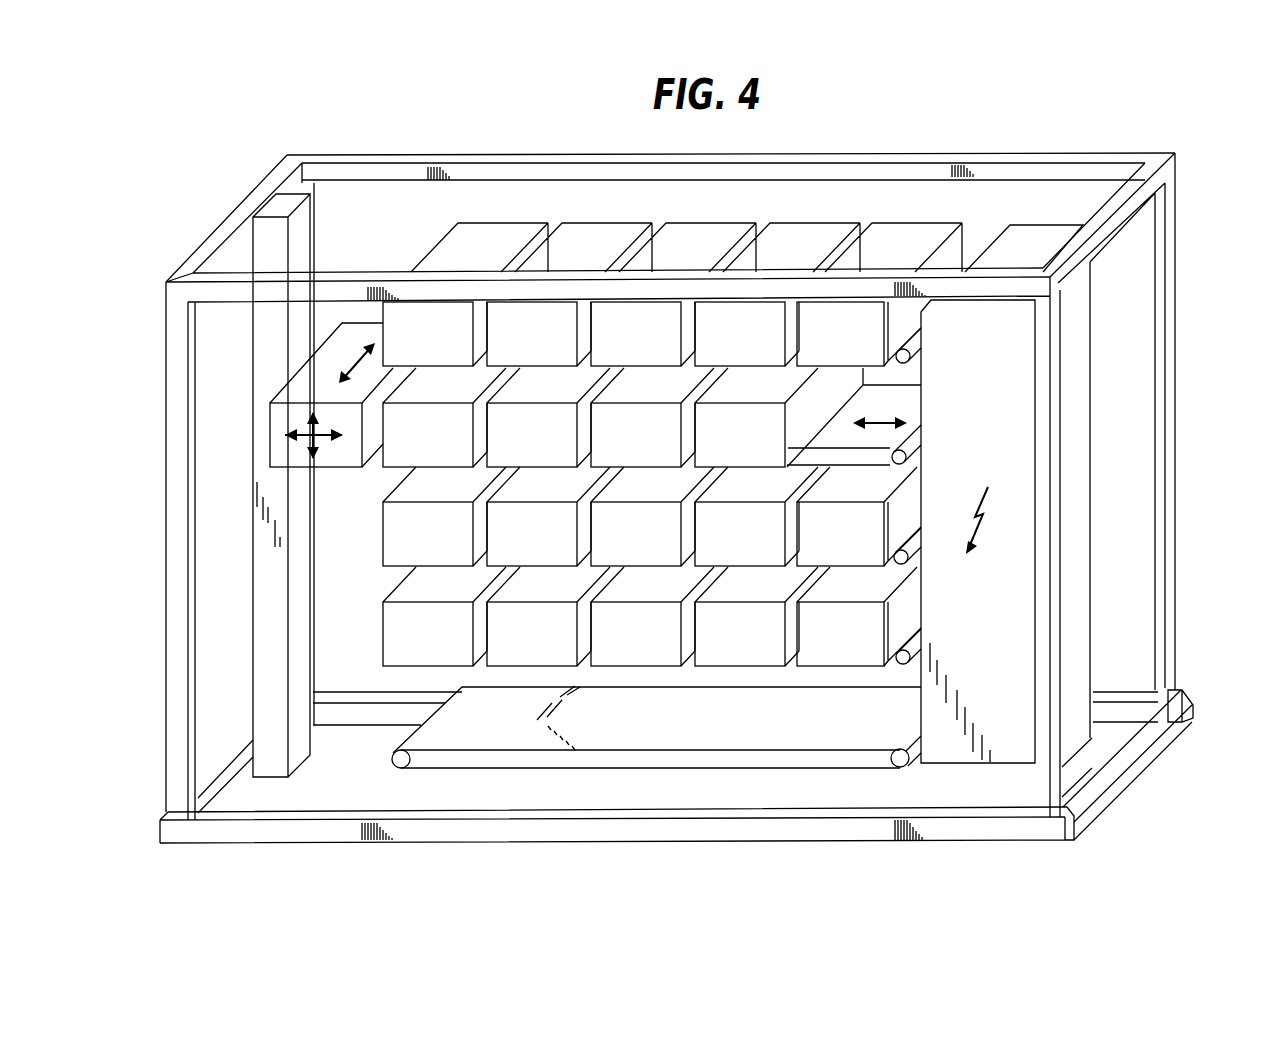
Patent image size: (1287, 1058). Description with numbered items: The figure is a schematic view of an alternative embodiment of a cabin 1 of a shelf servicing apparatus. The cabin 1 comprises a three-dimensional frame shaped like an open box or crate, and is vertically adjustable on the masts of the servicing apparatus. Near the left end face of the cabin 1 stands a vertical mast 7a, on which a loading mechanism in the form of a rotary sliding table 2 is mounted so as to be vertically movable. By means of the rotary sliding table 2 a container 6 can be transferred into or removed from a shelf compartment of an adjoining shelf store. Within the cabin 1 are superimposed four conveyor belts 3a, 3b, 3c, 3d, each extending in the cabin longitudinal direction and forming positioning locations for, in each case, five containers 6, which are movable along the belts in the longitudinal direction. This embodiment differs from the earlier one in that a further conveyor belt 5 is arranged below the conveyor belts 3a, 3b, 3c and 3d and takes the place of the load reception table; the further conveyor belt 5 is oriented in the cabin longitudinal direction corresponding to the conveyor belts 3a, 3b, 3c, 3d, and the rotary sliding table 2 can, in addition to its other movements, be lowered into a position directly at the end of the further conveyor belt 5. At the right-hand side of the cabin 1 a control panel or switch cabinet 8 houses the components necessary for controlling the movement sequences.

The cabin 1 is at (156, 342).
The rotary sliding table 2 is at (377, 447).
The conveyor belt 3a is at (920, 348).
The conveyor belt 3b is at (899, 449).
The conveyor belt 3c is at (908, 566).
The conveyor belt 3d is at (908, 663).
The further conveyor belt 5 is at (632, 734).
The container 6 is at (306, 396).
The mast 7a is at (270, 382).
The control panel or switch cabinet 8 is at (990, 455).